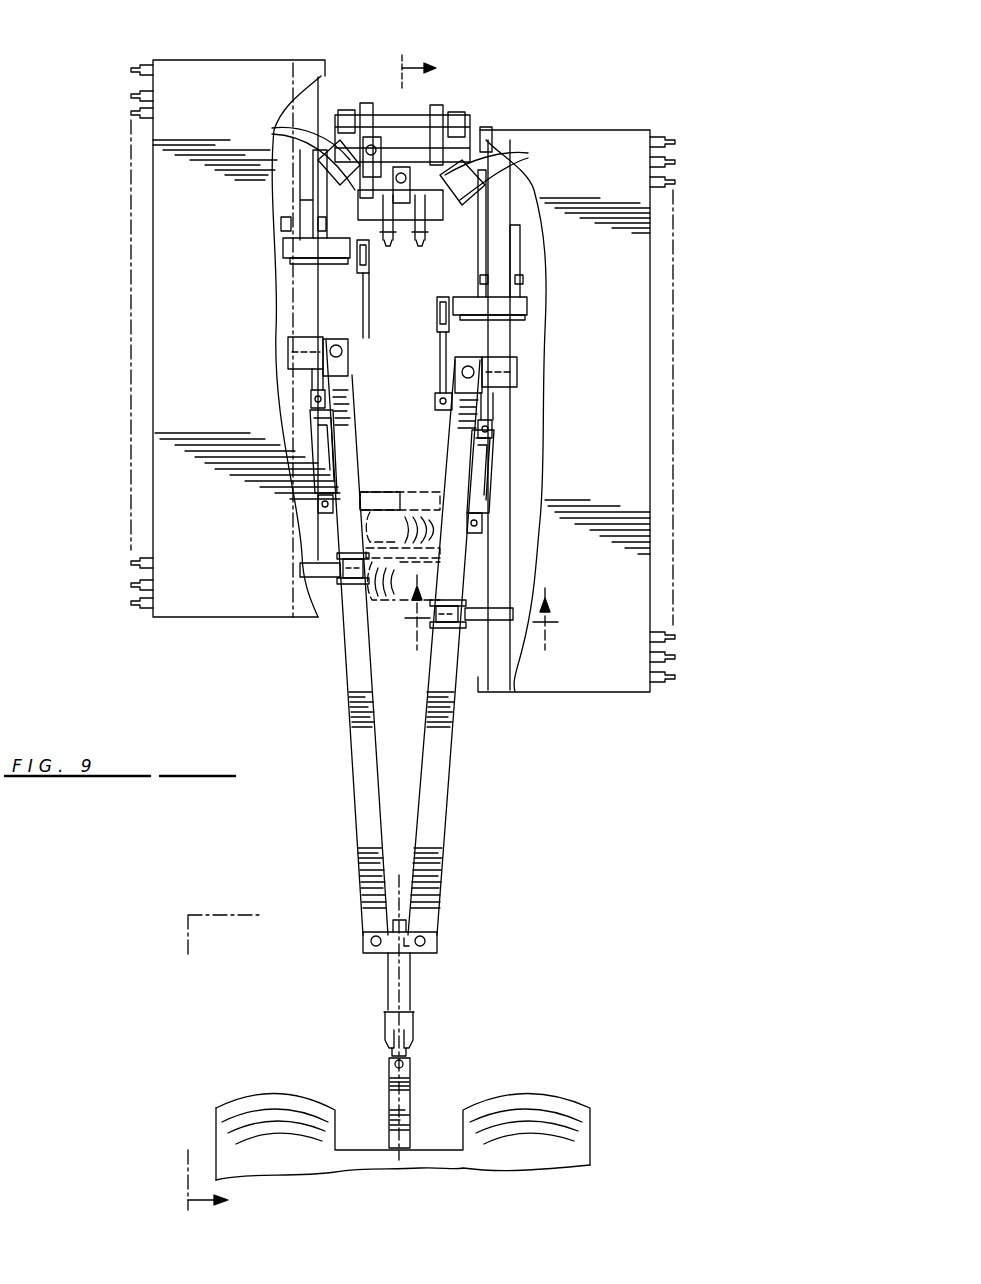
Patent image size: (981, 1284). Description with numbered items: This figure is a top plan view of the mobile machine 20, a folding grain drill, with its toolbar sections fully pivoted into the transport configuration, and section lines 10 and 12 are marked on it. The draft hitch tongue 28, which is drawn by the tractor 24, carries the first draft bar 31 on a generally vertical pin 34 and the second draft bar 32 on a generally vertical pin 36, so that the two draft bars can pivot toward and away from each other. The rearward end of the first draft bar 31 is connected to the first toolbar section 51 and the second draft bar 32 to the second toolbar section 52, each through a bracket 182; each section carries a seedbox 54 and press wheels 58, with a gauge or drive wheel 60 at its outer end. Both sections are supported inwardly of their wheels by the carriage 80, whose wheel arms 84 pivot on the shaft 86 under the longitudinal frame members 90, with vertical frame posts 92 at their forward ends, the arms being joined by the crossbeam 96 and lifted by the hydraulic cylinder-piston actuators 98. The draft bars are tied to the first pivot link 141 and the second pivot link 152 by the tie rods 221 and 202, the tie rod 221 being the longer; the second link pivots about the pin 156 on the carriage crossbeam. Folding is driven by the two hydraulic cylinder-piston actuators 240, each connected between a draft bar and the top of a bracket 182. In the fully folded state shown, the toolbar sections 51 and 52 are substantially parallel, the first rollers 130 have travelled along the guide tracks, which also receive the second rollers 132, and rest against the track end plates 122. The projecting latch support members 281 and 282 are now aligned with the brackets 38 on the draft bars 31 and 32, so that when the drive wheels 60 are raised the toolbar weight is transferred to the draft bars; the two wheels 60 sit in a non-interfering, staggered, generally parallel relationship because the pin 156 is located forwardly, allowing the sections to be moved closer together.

The section line 10- 10 is at (298, 632).
The section line 12- 12 is at (480, 613).
The mobile machine 20 is at (329, 750).
The tractor 24 is at (548, 1088).
The draft hitch tongue 28 is at (416, 980).
The first draft bar 31 is at (355, 752).
The second draft bar 32 is at (440, 770).
The vertical pin 34 is at (368, 940).
The vertical pin 36 is at (428, 941).
The bracket 38 is at (350, 596).
The first toolbar section 51 is at (211, 56).
The second toolbar section 52 is at (588, 126).
The seedbox 54 is at (263, 75).
The press wheels 58 is at (131, 113).
The gauge or drive wheel 60 is at (408, 512).
The carriage 80 is at (362, 102).
The arm 84 is at (346, 118).
The shaft 86 is at (420, 120).
The longitudinal frame members 90 is at (366, 118).
The vertical frame post 92 is at (366, 210).
The crossbeam 96 is at (446, 178).
The hydraulic cylinder-piston actuators 98 is at (403, 200).
The track end plates 122 is at (300, 260).
The first roller 130 is at (300, 246).
The second roller 132 is at (285, 226).
The first pivot link 141 is at (392, 138).
The second pivot link 152 is at (476, 174).
The pin 156 is at (392, 233).
The bracket 182 is at (312, 330).
The tie rod 202 is at (440, 350).
The tie rod 221 is at (363, 303).
The hydraulic cylinder-piston actuators 240 is at (320, 468).
The projecting latch or support member 281 is at (320, 570).
The projecting support latch or member 282 is at (497, 620).